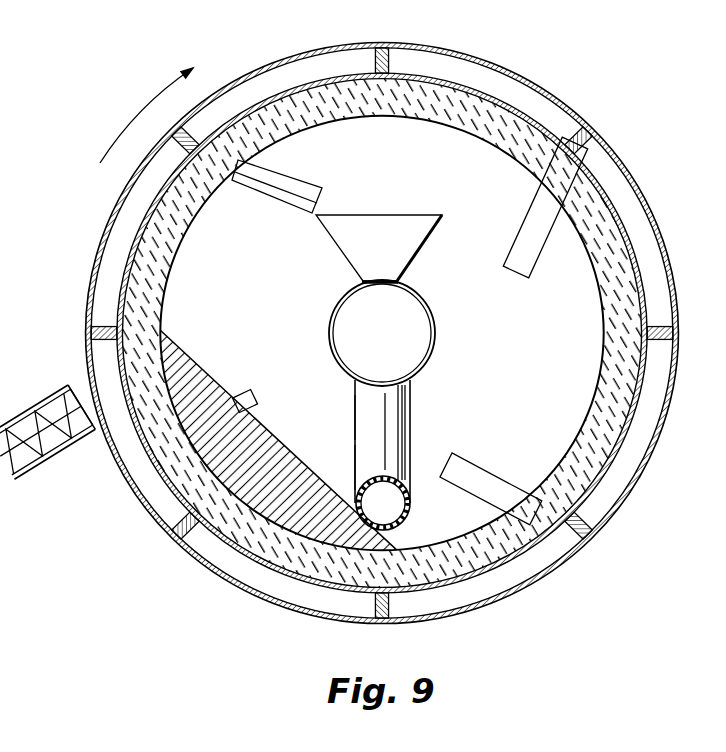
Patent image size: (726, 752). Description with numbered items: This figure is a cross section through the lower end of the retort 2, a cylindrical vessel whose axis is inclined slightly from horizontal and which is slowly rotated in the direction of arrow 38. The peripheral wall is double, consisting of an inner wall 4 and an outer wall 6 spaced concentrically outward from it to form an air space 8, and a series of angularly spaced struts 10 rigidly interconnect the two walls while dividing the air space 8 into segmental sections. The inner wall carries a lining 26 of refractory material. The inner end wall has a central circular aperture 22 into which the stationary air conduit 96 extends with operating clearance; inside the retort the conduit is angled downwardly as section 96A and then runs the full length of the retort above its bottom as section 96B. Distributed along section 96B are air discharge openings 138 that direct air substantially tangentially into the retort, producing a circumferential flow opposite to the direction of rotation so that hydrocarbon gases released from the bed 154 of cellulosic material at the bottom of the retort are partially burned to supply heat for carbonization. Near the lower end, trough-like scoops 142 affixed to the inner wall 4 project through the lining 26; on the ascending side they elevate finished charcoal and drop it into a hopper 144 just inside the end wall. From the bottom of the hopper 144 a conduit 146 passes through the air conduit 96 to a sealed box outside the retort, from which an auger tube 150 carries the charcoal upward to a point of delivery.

The retort 2 is at (527, 82).
The inner wall 4 is at (530, 120).
The outer wall 6 is at (495, 67).
The air space 8 is at (445, 62).
The struts 10 is at (391, 46).
The central circular aperture 22 is at (428, 335).
The lining 26 is at (165, 246).
The arrow 38 is at (142, 110).
The air conduit 96 is at (347, 331).
The downwardly angled section of air conduit 96A is at (360, 427).
The longitudinal section of air conduit 96B is at (362, 478).
The air discharge openings 138 is at (410, 498).
The scoops 142 is at (307, 183).
The hopper 144 is at (350, 245).
The conduit 146 is at (363, 283).
The auger tube 150 is at (47, 452).
The bed 154 is at (218, 350).